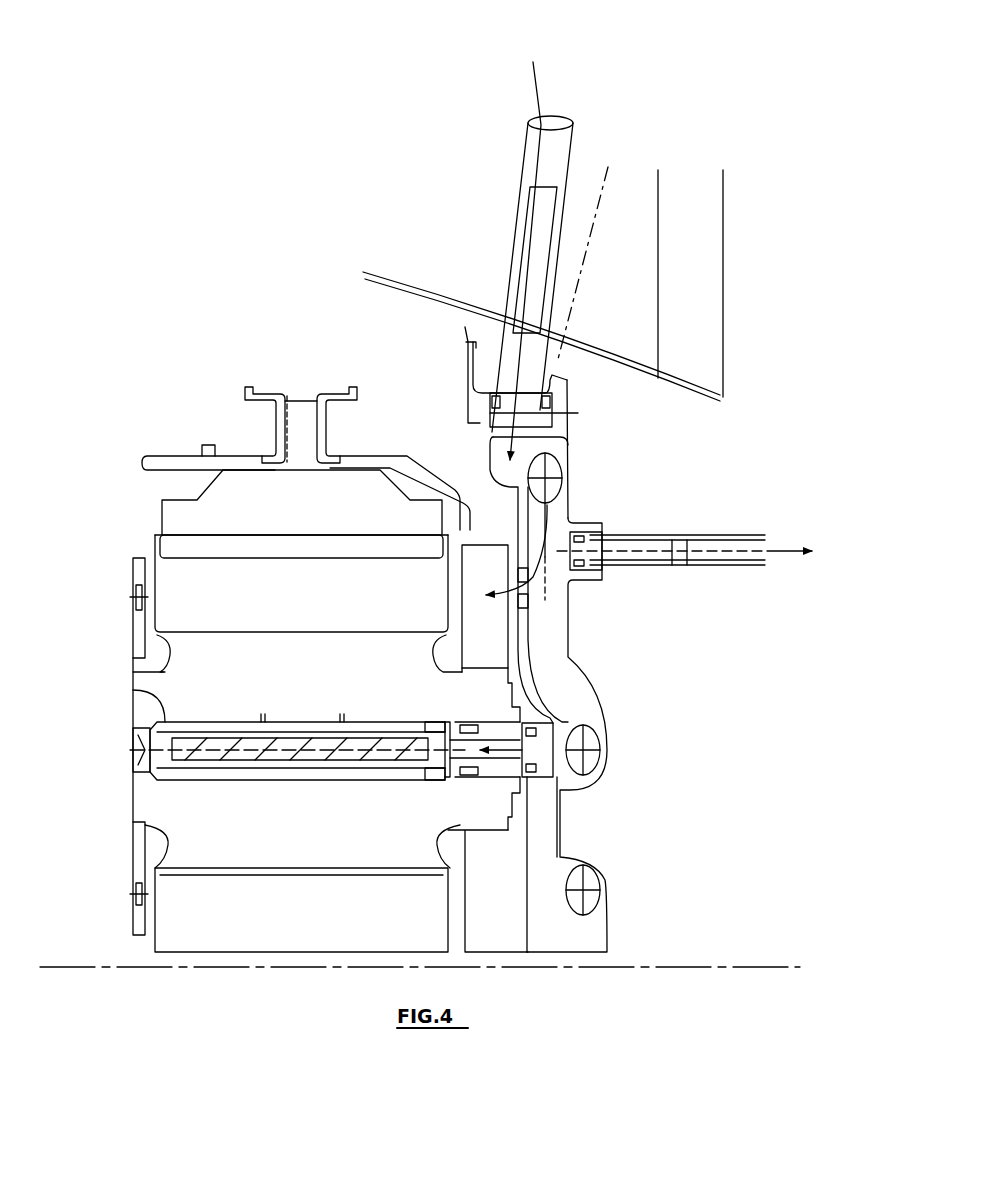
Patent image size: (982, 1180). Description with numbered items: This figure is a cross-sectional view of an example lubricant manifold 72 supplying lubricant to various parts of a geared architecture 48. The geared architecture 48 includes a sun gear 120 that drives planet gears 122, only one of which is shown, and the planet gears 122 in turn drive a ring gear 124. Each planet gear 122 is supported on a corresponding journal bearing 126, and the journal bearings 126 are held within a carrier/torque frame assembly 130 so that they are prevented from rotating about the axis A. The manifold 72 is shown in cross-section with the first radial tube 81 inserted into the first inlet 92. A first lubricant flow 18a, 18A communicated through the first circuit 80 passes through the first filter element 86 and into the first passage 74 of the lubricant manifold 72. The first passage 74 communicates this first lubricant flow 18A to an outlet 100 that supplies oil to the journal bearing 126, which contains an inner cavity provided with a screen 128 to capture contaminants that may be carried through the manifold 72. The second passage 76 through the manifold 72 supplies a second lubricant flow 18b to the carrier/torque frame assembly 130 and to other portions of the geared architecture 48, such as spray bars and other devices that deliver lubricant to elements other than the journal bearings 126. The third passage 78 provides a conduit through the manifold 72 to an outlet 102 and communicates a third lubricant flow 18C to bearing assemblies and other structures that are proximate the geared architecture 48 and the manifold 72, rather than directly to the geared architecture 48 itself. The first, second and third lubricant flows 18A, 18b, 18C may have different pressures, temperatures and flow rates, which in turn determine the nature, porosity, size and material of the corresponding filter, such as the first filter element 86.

The first lubricant flow 18a is at (540, 112).
The first circuit 80 is at (551, 122).
The first radial tube 81 is at (557, 170).
The first filter element 86 is at (540, 287).
The first inlet 92 is at (559, 375).
The lubricant manifold 72 is at (565, 432).
The second passage 76 is at (550, 495).
The outlet 102 is at (604, 529).
The third lubricant flow 18C is at (778, 552).
The third passage 78 is at (572, 555).
The carrier/torque frame assembly 130 is at (475, 553).
The second lubricant flow 18b is at (530, 575).
The first lubricant flow 18A is at (562, 722).
The first passage 74 is at (592, 750).
The outlet 100 is at (505, 757).
The ring gear 124 is at (170, 512).
The geared architecture 48 is at (124, 533).
The journal bearing 126 is at (162, 718).
The screen 128 is at (168, 745).
The planet gear 122 is at (140, 806).
The sun gear 120 is at (165, 885).
The axis A is at (666, 967).